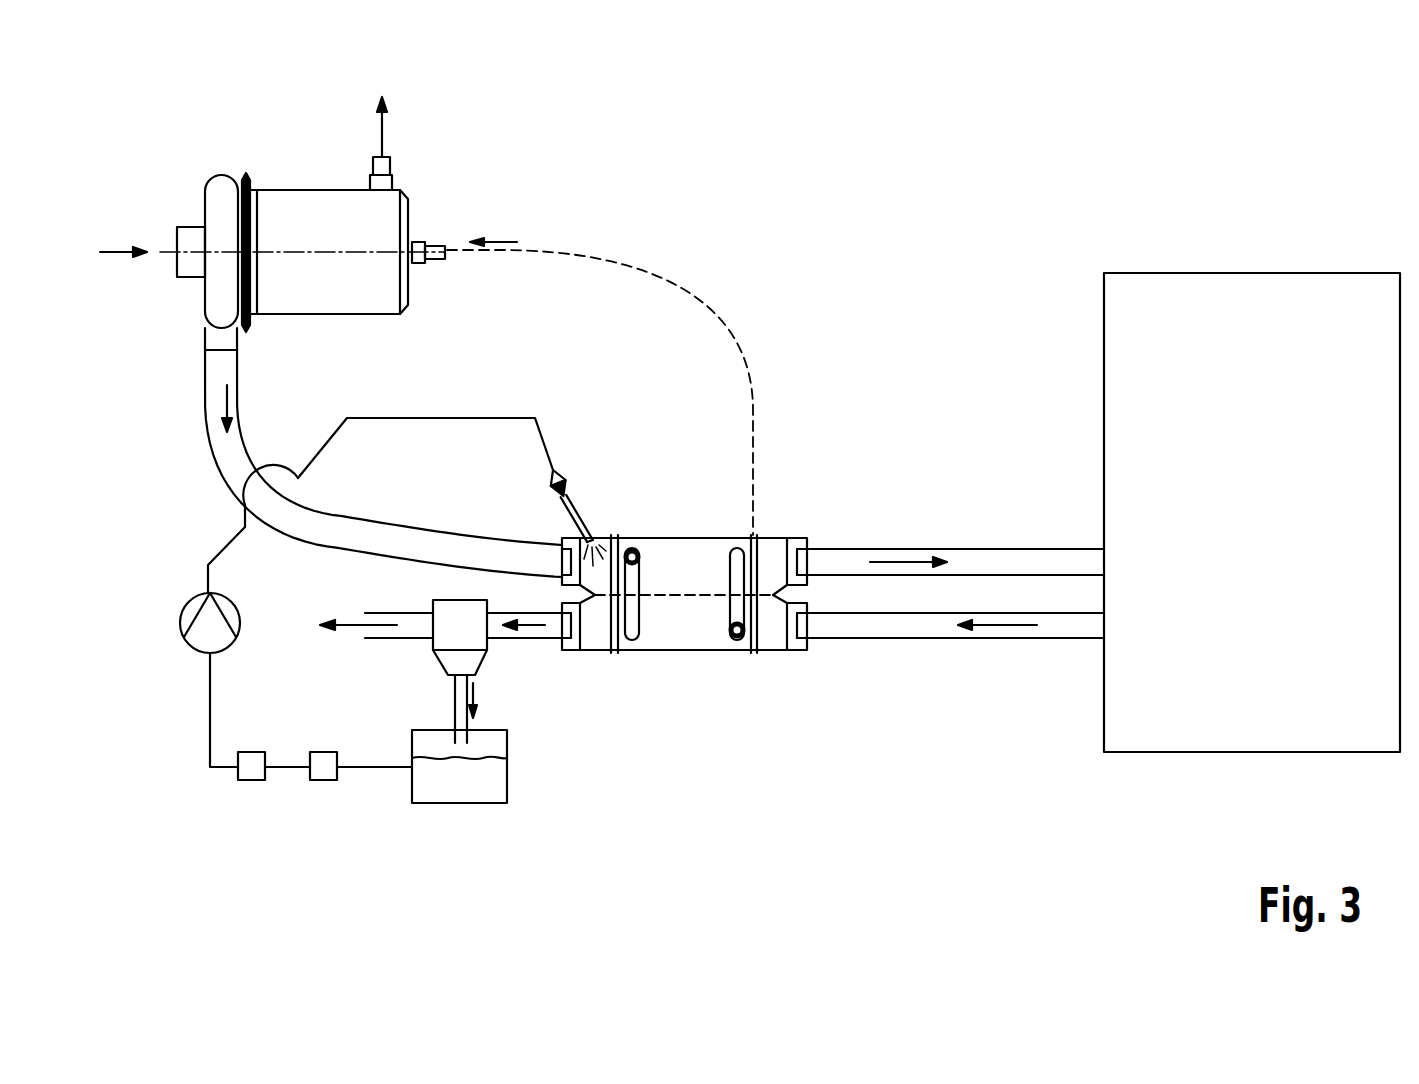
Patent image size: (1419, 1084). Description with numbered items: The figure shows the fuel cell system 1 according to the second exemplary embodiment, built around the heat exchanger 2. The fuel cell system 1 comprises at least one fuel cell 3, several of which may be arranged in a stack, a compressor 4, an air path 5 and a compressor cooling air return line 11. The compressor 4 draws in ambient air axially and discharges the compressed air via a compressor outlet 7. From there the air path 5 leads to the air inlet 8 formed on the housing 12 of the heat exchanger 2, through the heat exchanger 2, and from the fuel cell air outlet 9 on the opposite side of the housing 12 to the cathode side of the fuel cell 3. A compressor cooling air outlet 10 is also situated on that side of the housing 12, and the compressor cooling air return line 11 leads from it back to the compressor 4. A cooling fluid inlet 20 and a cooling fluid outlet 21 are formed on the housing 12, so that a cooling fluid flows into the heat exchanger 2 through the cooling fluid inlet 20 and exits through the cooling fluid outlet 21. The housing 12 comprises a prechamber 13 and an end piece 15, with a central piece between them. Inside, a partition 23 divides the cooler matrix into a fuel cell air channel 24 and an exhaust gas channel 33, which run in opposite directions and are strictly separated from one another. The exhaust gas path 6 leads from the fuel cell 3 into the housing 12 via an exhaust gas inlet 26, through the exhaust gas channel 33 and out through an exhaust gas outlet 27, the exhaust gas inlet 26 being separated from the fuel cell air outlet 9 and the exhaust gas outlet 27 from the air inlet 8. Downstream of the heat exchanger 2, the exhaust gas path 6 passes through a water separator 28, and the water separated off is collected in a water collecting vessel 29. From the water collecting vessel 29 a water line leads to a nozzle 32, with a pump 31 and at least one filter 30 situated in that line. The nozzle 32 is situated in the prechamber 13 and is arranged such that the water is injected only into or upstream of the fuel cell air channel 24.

The fuel cell system 1 is at (1070, 162).
The heat exchanger 2 is at (617, 823).
The fuel cell 3 is at (1242, 302).
The compressor 4 is at (288, 160).
The air path 5 is at (233, 455).
The exhaust gas path 6 is at (407, 638).
The compressor outlet 7 is at (207, 350).
The air inlet 8 is at (557, 538).
The fuel cell air outlet 9 is at (810, 540).
The compressor cooling air outlet 10 is at (755, 535).
The compressor cooling air return line 11 is at (673, 313).
The housing 12 is at (686, 618).
The prechamber 13 is at (603, 537).
The end piece 15 is at (588, 650).
The cooling fluid inlet 20 is at (632, 548).
The cooling fluid outlet 21 is at (733, 650).
The partition 23 is at (687, 595).
The fuel cell air channel 24 is at (697, 557).
The exhaust gas inlet 26 is at (808, 650).
The exhaust gas outlet 27 is at (558, 650).
The water separator 28 is at (447, 600).
The water collecting vessel 29 is at (460, 778).
The filter 30 is at (250, 780).
The pump 31 is at (180, 622).
The nozzle 32 is at (585, 510).
The exhaust gas channel 33 is at (660, 633).